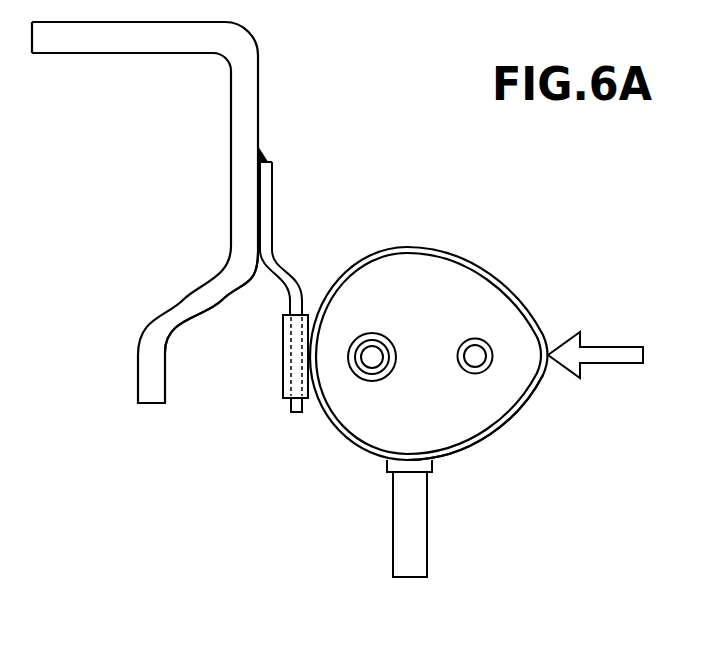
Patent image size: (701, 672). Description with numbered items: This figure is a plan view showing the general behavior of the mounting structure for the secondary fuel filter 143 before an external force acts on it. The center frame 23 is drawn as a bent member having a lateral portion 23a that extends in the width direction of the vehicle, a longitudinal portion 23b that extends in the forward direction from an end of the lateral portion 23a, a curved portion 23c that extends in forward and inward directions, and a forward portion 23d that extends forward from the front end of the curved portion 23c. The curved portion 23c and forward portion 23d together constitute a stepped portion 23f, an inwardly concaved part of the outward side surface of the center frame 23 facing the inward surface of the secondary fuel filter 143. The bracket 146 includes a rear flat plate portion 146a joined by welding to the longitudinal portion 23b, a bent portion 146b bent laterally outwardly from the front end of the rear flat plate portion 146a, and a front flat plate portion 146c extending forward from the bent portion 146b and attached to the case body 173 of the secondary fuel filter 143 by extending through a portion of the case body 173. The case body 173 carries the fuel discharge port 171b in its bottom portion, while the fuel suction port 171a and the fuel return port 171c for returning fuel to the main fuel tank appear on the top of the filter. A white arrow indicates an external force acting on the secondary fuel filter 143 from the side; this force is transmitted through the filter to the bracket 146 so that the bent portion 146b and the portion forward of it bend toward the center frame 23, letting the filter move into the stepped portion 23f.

The center frame 23 is at (201, 235).
The lateral portion 23a is at (95, 42).
The longitudinal portion 23b is at (242, 163).
The curved portion 23c is at (192, 294).
The forward portion 23d is at (148, 382).
The stepped portion 23f is at (184, 346).
The bracket 146 is at (332, 286).
The rear flat plate portion 146a is at (267, 213).
The bent portion 146b is at (287, 277).
The front flat plate portion 146c is at (295, 415).
The secondary fuel filter 143 is at (485, 255).
The fuel suction port 171a is at (370, 372).
The fuel discharge port 171b is at (420, 552).
The fuel return port 171c is at (488, 342).
The case body 173 is at (502, 441).